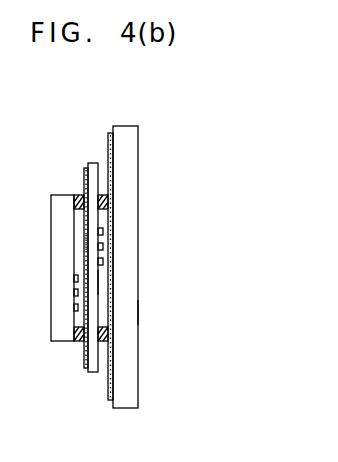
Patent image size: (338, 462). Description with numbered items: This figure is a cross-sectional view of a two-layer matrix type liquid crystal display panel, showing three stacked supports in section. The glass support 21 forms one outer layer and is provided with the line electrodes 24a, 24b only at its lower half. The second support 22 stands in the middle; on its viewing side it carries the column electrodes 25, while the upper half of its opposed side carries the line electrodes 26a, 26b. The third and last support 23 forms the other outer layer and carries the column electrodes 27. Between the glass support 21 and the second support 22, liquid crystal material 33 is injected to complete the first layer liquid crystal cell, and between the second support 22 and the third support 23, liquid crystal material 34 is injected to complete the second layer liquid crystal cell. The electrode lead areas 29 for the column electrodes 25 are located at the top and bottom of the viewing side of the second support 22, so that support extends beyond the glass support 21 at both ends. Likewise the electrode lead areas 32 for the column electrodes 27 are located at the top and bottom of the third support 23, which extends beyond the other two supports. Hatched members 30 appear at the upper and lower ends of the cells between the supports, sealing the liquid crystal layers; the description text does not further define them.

The glass support 21 is at (62, 205).
The second support 22 is at (93, 163).
The third support 23 is at (130, 134).
The line electrode 24a is at (76, 307).
The line electrode 24b is at (76, 292).
The column electrode 25 is at (85, 242).
The line electrode 26a is at (115, 227).
The line electrode 26b is at (103, 247).
The column electrode 27 is at (124, 313).
The electrode lead area 29 is at (85, 165).
The sealing member 30 is at (105, 333).
The electrode lead area 32 is at (110, 133).
The liquid crystal material 33 is at (78, 218).
The liquid crystal material 34 is at (105, 282).